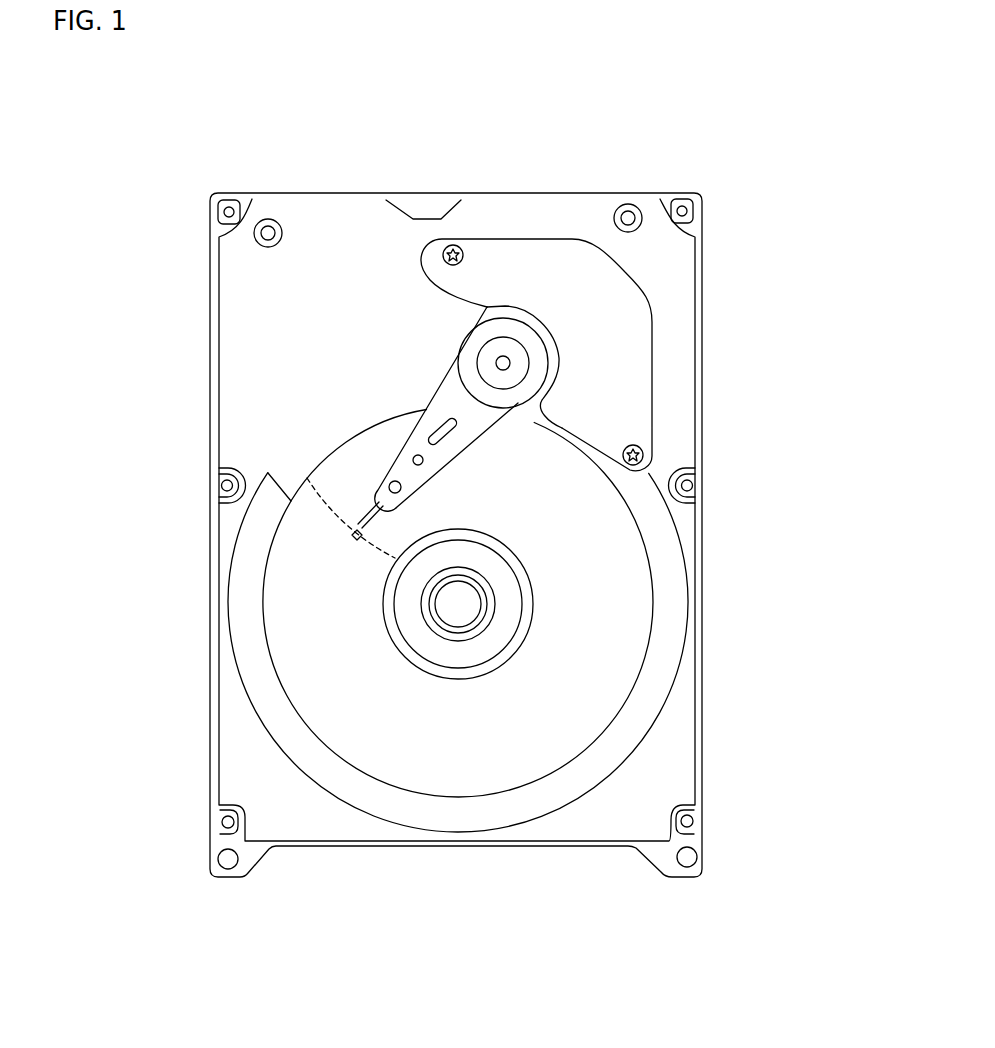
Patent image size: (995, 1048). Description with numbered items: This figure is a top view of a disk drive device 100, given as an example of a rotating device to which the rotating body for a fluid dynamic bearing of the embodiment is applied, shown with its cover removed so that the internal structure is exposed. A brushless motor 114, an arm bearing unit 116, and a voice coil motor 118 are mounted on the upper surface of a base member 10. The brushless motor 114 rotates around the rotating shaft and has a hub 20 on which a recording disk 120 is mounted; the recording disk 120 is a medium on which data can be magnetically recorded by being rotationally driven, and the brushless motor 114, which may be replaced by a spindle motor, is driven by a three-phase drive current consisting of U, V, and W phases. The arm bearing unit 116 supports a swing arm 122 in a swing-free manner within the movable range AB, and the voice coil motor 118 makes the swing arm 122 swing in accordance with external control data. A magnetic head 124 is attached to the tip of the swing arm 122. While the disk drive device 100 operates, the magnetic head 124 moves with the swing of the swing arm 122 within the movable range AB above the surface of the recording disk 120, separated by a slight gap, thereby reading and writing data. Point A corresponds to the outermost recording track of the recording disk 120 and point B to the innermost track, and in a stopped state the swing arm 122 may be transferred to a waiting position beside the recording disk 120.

The disk drive device 100 is at (558, 157).
The base member 10 is at (702, 278).
The hub 20 is at (498, 633).
The brushless motor 114 is at (519, 578).
The arm bearing unit 116 is at (550, 362).
The voice coil motor 118 is at (623, 266).
The recording disk 120 is at (625, 637).
The swing arm 122 is at (436, 388).
The magnetic head 124 is at (352, 534).